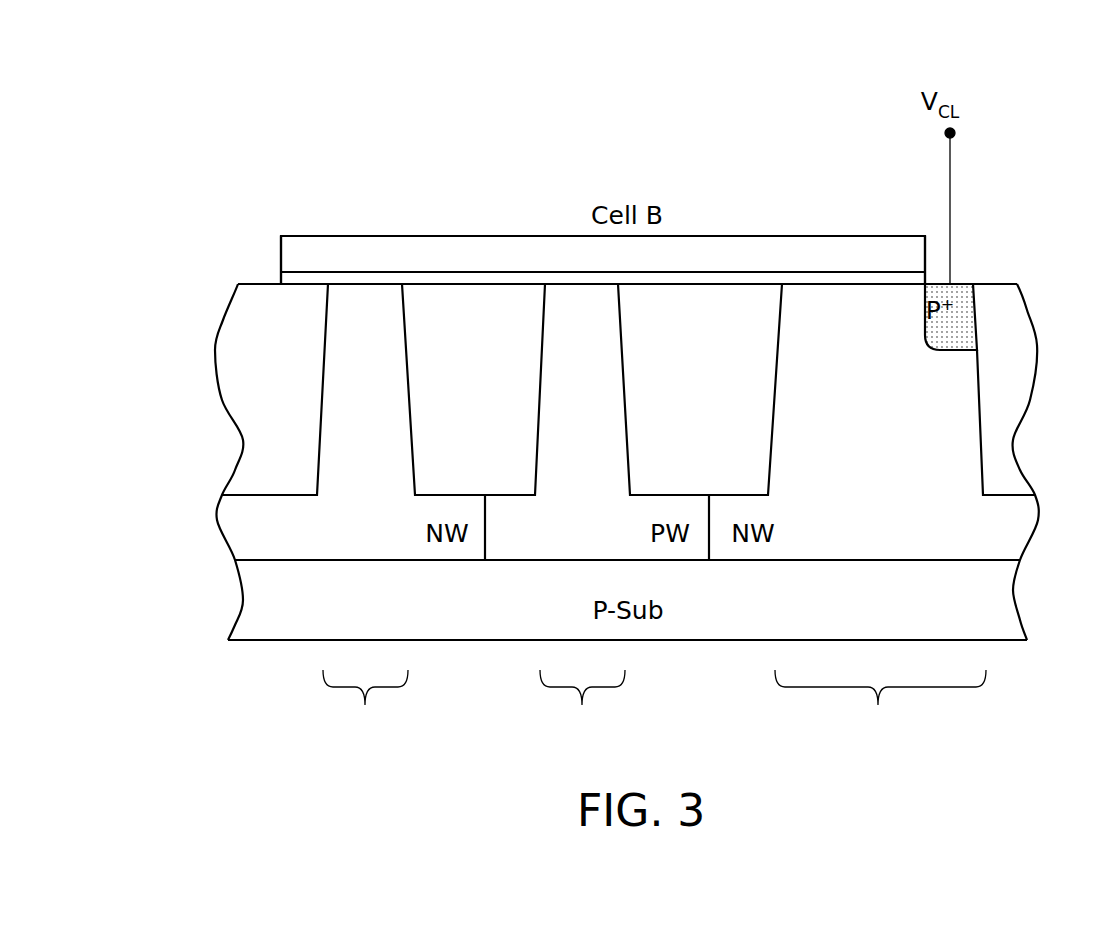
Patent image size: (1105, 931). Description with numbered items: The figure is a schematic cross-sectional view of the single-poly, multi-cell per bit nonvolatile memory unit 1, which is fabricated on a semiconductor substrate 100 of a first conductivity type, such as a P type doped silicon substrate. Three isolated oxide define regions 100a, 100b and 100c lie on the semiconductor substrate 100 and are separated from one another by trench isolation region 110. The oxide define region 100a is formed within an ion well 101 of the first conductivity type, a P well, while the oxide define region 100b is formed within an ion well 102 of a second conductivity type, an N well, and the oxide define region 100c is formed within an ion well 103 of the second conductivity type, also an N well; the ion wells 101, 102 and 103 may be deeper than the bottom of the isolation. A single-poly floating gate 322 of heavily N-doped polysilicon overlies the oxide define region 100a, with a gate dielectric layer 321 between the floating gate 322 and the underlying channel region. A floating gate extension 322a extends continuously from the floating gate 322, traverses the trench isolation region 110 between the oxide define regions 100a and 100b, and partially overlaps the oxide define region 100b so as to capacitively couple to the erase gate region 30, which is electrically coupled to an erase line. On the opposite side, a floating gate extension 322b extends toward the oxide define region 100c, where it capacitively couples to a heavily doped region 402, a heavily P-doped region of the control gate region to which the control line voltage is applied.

The single-poly, multi-cell per bit nonvolatile memory unit 1 is at (388, 122).
The erase gate region 30 is at (351, 332).
The semiconductor substrate 100 is at (1006, 596).
The oxide define region 100a is at (582, 703).
The oxide define region 100b is at (365, 703).
The oxide define region 100c is at (880, 703).
The ion well 101 is at (566, 548).
The ion well 102 is at (318, 548).
The ion well 103 is at (848, 548).
The trench isolation region 110 is at (246, 405).
The gate dielectric layer 321 is at (572, 277).
The floating gate 322 is at (682, 245).
The floating gate extension 322a is at (299, 221).
The floating gate extension 322b is at (858, 230).
The heavily doped region 402 is at (958, 349).